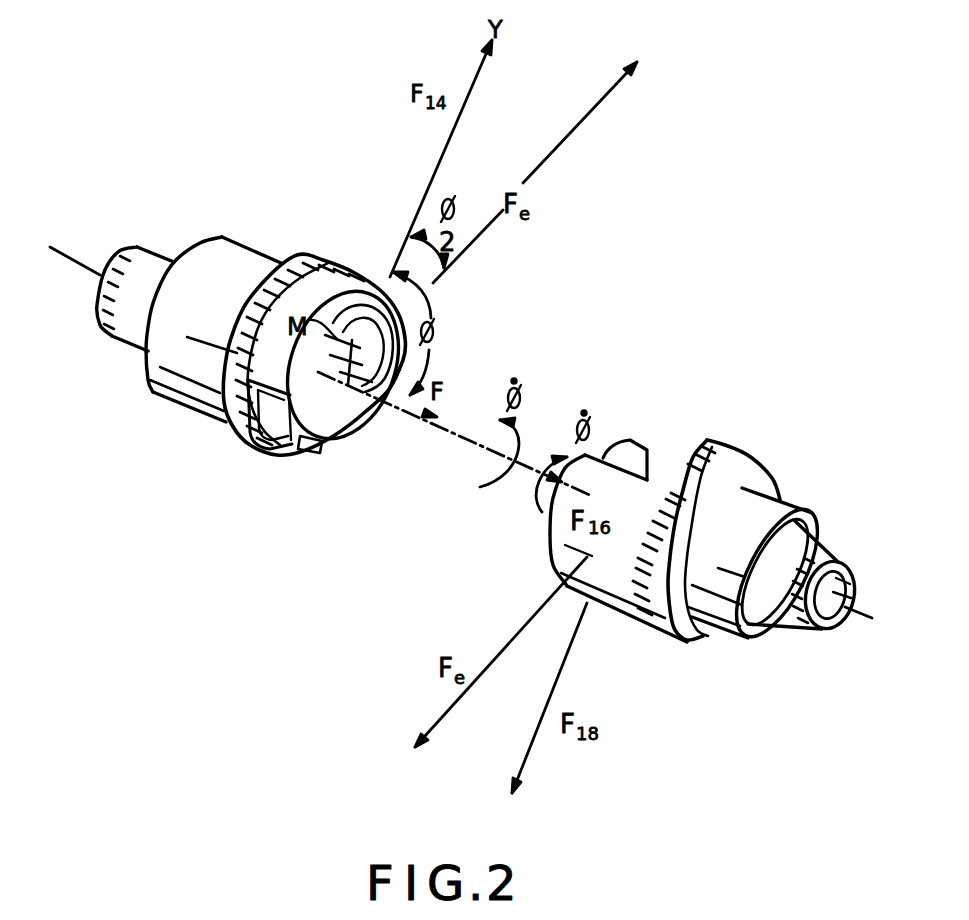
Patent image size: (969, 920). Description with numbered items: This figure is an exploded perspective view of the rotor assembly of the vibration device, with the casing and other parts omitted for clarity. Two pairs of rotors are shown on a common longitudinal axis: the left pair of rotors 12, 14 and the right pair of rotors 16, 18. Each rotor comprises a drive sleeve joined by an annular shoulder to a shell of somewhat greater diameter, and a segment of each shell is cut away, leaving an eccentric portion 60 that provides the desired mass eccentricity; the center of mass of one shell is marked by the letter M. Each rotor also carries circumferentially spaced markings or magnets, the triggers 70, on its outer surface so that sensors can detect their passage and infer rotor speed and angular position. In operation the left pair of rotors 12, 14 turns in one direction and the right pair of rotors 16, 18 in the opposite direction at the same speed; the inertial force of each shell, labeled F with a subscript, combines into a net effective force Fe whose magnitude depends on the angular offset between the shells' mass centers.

The rotor 12 is at (123, 328).
The rotor 14 is at (190, 411).
The rotor 16 is at (650, 452).
The rotor 18 is at (692, 640).
The eccentric portion 60 is at (335, 303).
The triggers 70 is at (124, 255).